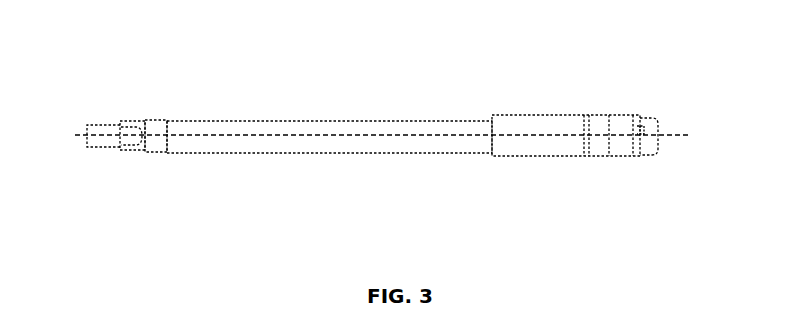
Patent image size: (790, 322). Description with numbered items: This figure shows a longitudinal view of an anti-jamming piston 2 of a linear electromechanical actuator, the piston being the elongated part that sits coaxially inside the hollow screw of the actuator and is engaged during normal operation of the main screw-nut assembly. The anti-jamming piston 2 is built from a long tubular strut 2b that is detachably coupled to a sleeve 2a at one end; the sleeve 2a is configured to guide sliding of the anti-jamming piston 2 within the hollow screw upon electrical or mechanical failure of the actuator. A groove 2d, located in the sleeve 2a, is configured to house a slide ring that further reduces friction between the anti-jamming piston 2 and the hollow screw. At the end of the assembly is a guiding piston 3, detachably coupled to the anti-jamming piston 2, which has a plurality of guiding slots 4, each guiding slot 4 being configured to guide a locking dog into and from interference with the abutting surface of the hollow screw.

The anti-jamming piston 2 is at (383, 131).
The sleeve 2a is at (566, 109).
The tubular strut 2b is at (283, 130).
The groove 2d is at (598, 123).
The guiding piston 3 is at (647, 120).
The guiding slot 4 is at (641, 127).